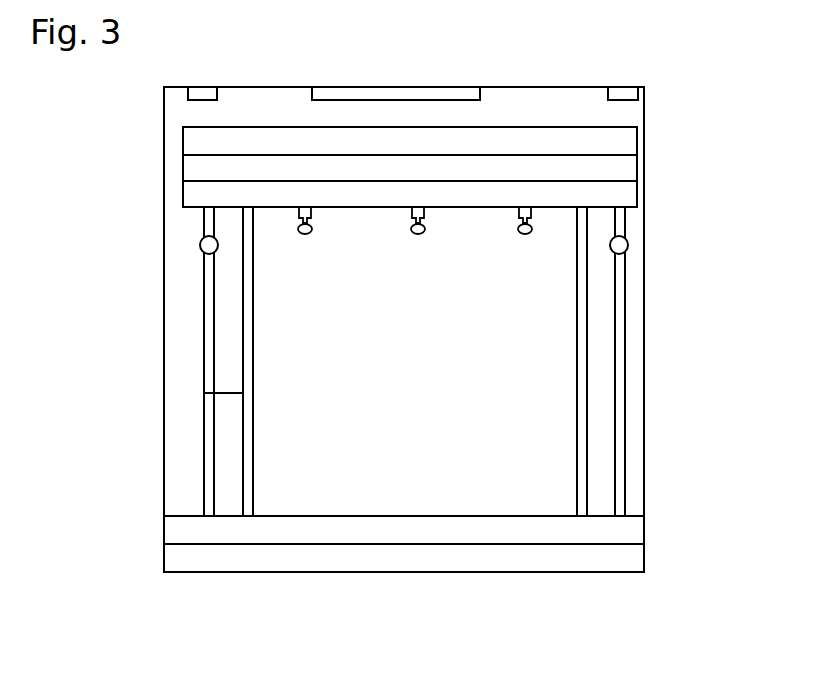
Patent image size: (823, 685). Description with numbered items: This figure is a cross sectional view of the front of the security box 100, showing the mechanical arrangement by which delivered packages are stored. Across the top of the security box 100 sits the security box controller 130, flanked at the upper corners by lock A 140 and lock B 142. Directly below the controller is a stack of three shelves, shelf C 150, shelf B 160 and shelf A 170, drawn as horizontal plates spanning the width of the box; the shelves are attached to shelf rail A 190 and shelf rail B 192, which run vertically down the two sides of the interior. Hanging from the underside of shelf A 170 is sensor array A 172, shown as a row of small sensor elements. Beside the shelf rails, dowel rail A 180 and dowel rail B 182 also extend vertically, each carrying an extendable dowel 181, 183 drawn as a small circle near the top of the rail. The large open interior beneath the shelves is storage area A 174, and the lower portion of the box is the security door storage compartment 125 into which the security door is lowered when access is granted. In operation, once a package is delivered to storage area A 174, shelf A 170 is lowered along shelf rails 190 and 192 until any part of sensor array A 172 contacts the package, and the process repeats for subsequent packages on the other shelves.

The security box 100 is at (242, 87).
The security door storage compartment 125 is at (406, 541).
The security box controller 130 is at (460, 92).
The lock A 140 is at (192, 92).
The lock B 142 is at (636, 88).
The shelf C 150 is at (426, 151).
The shelf B 160 is at (426, 178).
The shelf A 170 is at (426, 205).
The sensor array A 172 is at (550, 224).
The storage area A 174 is at (423, 379).
The dowel rail A 180 is at (204, 284).
The extendable dowel 181 is at (200, 242).
The dowel rail B 182 is at (627, 336).
The extendable dowel 183 is at (628, 240).
The shelf rail A 190 is at (214, 393).
The shelf rail B 192 is at (582, 434).